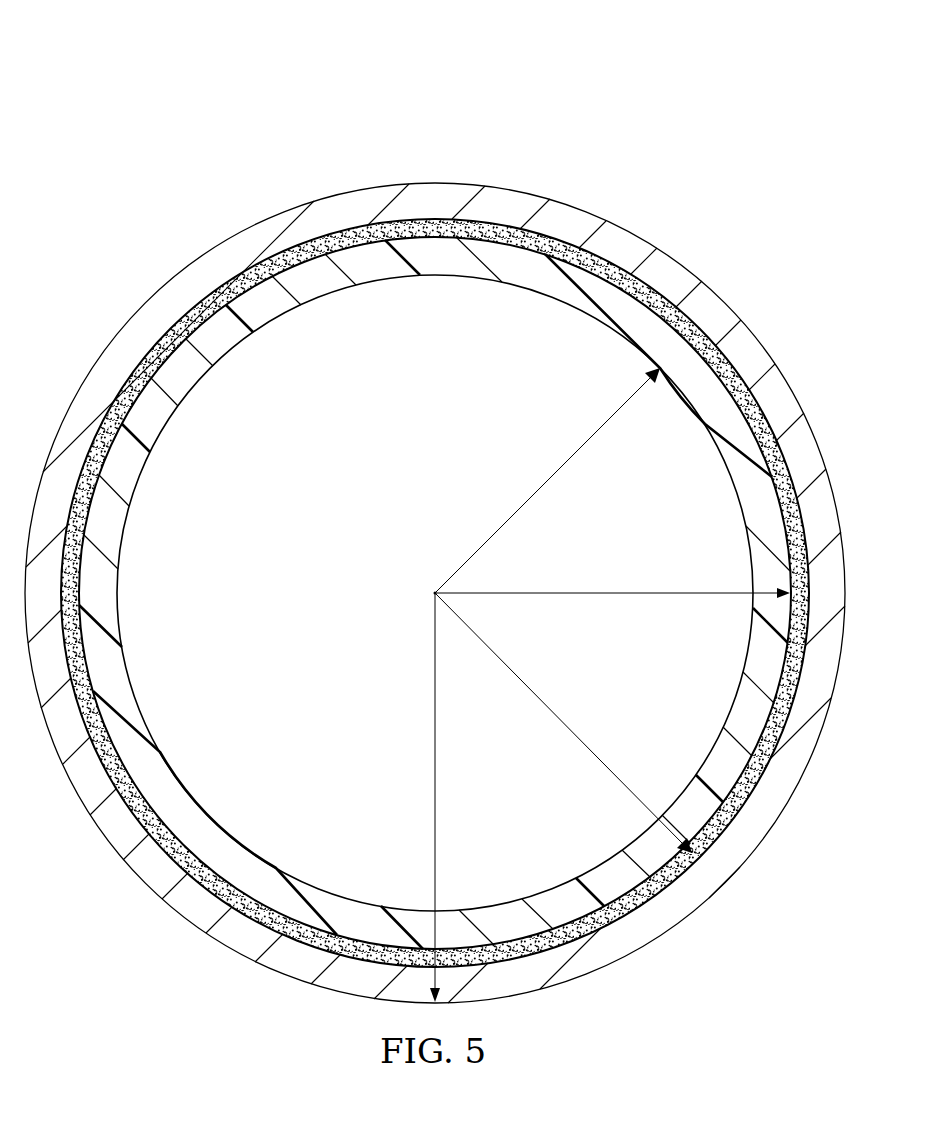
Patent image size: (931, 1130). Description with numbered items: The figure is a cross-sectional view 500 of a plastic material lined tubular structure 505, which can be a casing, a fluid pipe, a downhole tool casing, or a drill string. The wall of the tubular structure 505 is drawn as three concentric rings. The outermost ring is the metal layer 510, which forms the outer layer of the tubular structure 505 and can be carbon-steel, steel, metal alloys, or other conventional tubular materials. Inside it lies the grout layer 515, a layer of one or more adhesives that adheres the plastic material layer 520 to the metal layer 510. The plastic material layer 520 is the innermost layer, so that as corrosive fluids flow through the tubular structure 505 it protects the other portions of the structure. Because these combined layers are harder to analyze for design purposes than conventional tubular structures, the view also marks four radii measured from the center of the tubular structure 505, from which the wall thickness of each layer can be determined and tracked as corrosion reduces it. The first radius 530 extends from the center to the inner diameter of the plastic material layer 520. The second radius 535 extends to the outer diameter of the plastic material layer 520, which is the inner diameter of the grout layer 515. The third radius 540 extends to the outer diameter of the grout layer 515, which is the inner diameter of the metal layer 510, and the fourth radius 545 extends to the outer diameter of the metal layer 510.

The cross-sectional view 500 is at (190, 68).
The tubular structure 505 is at (649, 166).
The metal layer 510 is at (361, 192).
The grout layer 515 is at (232, 293).
The plastic material layer 520 is at (432, 250).
The radius r1 530 is at (546, 482).
The radius r2 535 is at (609, 605).
The radius r3 540 is at (566, 729).
The radius r4 545 is at (432, 802).